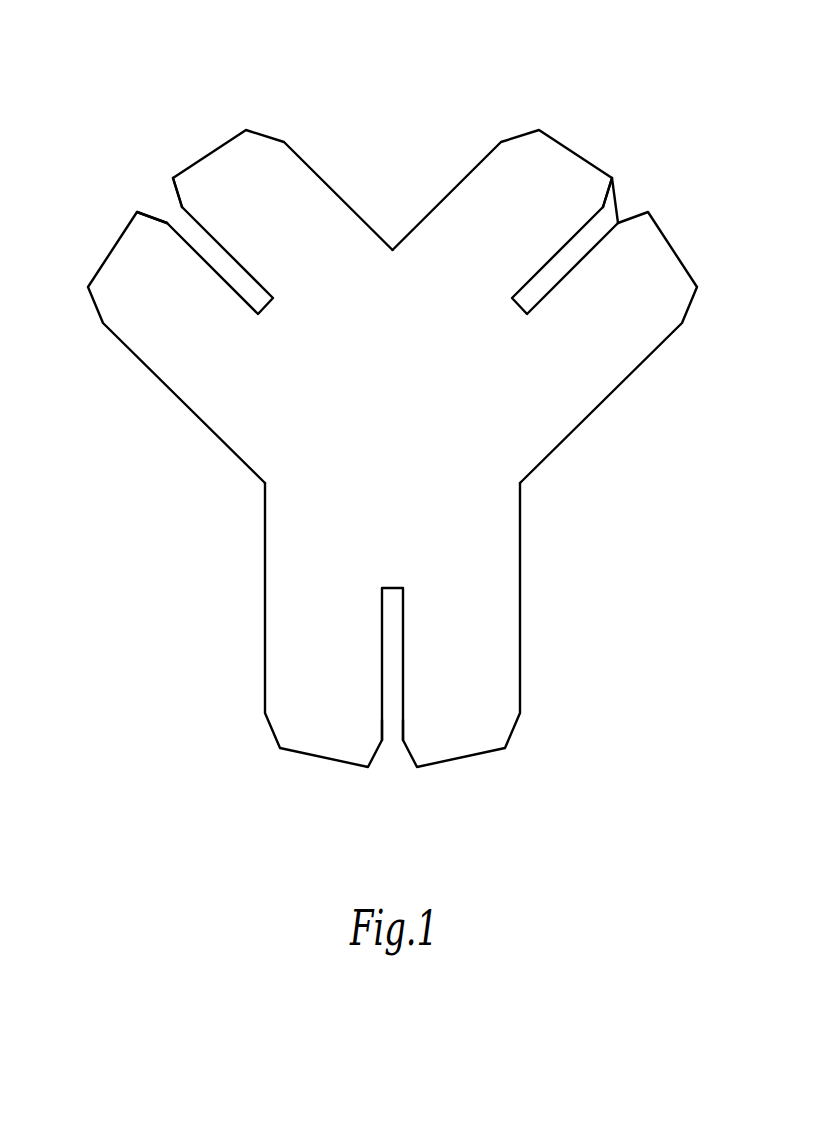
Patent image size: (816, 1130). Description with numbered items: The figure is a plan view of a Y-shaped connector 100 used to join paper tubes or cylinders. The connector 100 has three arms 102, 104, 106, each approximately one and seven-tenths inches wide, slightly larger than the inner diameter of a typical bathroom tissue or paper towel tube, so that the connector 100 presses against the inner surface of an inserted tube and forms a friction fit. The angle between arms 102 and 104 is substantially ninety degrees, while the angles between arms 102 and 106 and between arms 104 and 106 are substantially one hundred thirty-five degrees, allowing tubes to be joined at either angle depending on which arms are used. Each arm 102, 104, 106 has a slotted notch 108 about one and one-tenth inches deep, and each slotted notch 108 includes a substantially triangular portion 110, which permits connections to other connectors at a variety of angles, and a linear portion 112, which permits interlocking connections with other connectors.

The Y-shaped connector 100 is at (374, 429).
The arm 102 is at (580, 154).
The arm 104 is at (285, 142).
The arm 106 is at (521, 598).
The slotted notch 108 is at (150, 167).
The triangular portion 110 is at (166, 207).
The linear portion 112 is at (222, 262).